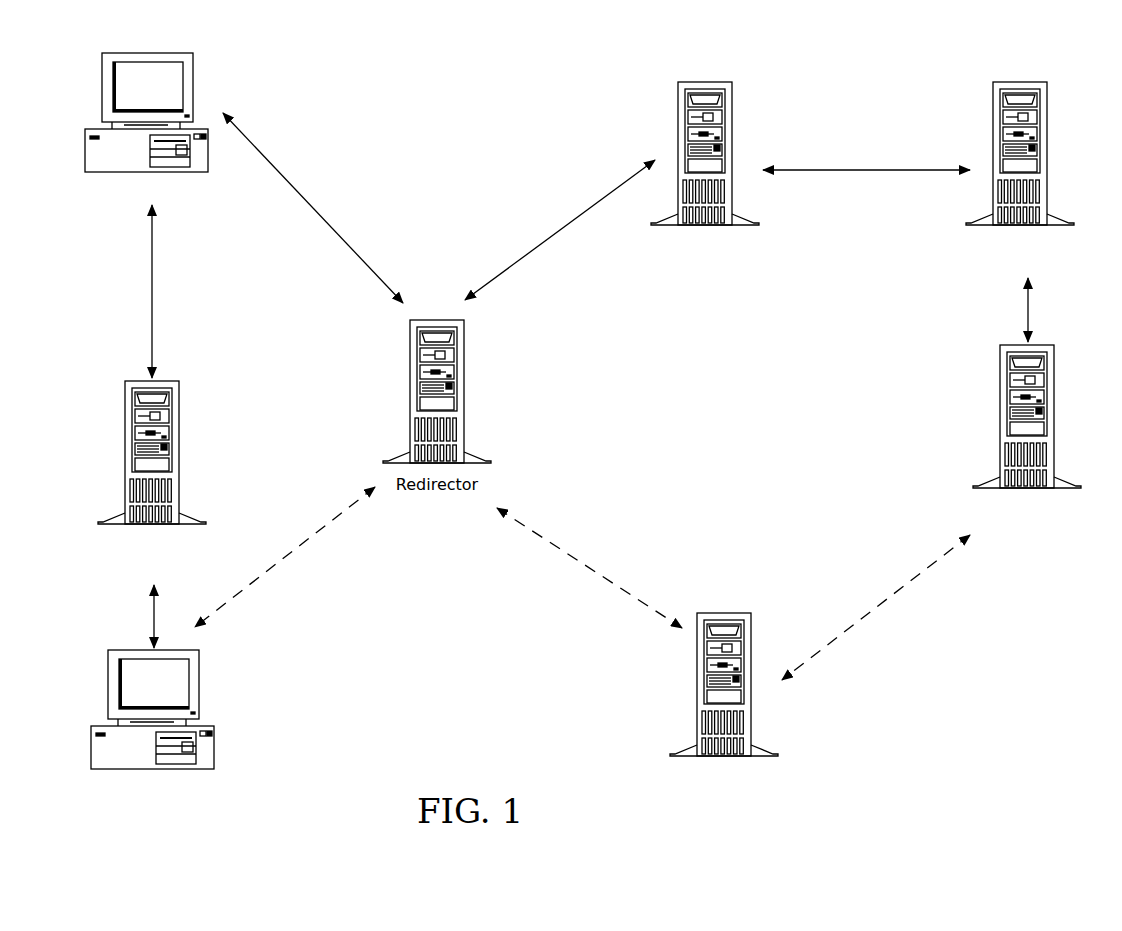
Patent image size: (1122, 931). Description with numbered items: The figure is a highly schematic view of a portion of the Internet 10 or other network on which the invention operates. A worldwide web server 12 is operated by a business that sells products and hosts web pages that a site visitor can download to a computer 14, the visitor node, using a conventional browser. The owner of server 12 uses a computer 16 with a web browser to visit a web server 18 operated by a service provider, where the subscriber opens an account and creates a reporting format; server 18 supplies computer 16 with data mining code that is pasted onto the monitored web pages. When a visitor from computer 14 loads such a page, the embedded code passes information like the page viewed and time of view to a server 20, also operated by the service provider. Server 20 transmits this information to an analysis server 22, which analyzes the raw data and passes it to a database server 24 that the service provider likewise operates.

The portion of the Internet 10 is at (440, 115).
The worldwide web server 12 is at (180, 440).
The computer 14 is at (193, 80).
The computer 16 is at (215, 732).
The web server 18 is at (697, 688).
The server 20 is at (732, 120).
The analysis server 22 is at (993, 151).
The database server 24 is at (1000, 418).